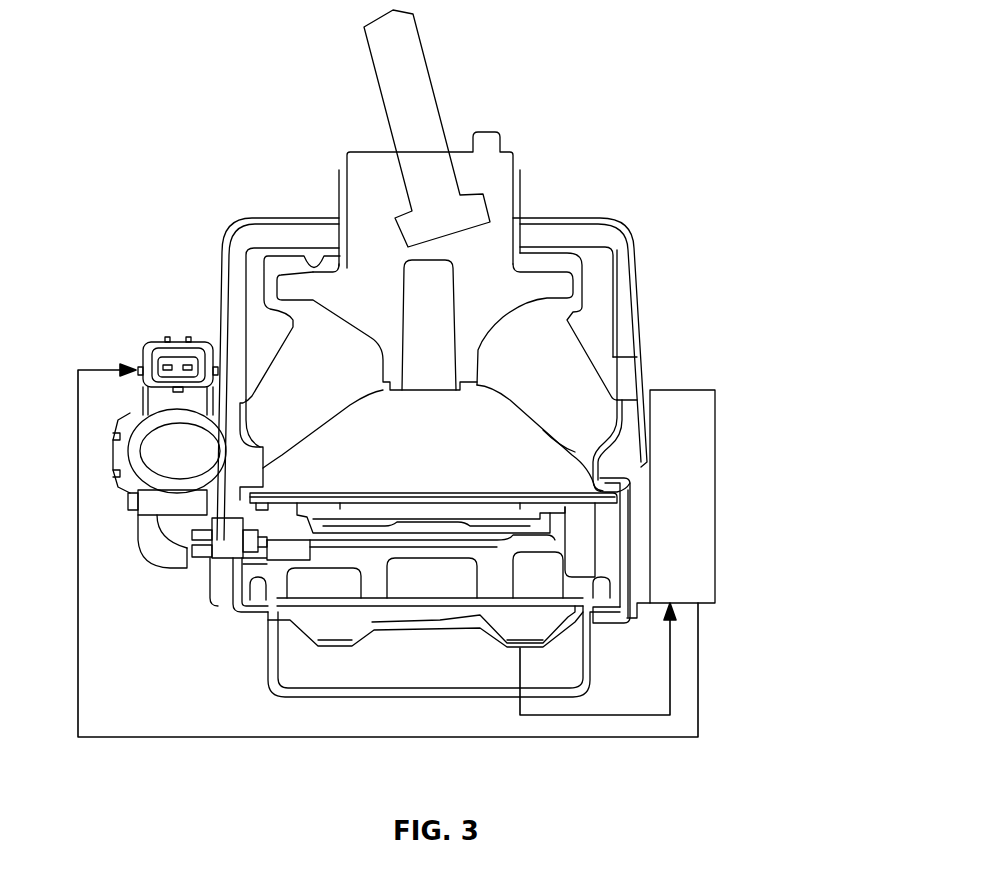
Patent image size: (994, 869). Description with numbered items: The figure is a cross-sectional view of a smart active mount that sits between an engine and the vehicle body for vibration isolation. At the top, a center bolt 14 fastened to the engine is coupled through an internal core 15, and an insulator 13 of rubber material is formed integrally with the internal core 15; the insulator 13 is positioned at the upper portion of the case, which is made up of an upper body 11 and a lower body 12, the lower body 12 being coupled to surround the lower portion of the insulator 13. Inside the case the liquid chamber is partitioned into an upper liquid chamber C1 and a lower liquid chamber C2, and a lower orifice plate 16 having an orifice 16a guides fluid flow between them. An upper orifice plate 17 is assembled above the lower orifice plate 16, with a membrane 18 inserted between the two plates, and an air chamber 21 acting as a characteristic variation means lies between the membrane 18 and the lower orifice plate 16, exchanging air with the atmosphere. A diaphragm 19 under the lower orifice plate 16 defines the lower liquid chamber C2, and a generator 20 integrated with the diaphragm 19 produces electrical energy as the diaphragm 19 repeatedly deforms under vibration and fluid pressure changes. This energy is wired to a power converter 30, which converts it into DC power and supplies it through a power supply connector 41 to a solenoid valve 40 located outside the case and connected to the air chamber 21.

The upper body 11 is at (649, 380).
The lower body 12 is at (616, 636).
The insulator 13 is at (543, 350).
The center bolt 14 is at (412, 72).
The internal core 15 is at (487, 250).
The lower orifice plate 16 is at (580, 520).
The orifice 16a is at (597, 548).
The upper orifice plate 17 is at (540, 500).
The membrane 18 is at (320, 465).
The diaphragm 19 is at (385, 622).
The generator 20 is at (490, 630).
The air chamber 21 is at (355, 548).
The power converter 30 is at (722, 588).
The solenoid valve 40 is at (98, 448).
The power supply connector 41 is at (177, 352).
The upper liquid chamber C1 is at (190, 535).
The lower liquid chamber C2 is at (335, 625).